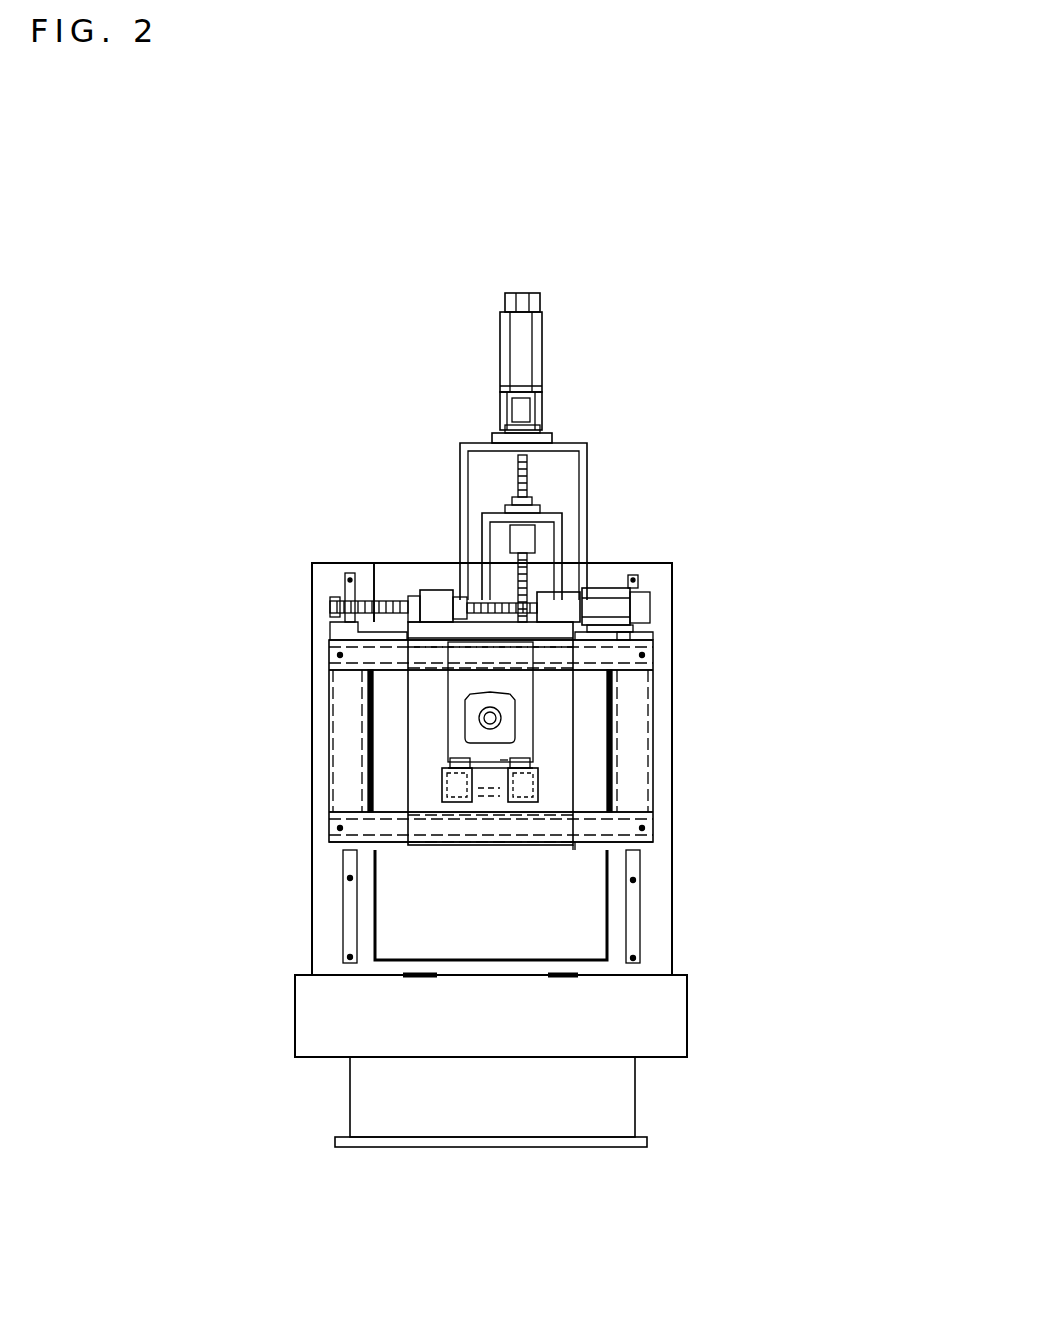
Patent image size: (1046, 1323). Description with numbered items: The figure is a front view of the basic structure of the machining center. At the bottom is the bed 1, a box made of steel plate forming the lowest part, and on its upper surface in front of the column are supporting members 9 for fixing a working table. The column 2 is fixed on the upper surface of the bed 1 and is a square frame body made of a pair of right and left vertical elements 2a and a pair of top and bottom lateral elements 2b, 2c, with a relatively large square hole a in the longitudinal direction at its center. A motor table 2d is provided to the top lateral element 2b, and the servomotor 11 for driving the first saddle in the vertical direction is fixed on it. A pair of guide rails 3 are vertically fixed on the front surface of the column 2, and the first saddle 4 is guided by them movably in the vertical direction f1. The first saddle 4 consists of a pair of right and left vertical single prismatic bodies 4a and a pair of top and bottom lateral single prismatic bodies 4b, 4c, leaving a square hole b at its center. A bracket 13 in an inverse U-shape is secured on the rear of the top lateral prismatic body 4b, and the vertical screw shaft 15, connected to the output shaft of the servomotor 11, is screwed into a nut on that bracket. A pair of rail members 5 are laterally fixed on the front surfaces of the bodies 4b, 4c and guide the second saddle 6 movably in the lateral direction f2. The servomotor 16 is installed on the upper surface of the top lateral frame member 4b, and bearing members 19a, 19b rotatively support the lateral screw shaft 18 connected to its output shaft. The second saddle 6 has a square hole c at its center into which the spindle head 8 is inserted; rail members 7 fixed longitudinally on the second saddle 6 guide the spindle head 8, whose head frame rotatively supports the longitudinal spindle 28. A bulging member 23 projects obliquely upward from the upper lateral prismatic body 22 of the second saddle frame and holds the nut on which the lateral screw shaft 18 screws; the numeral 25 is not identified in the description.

The bed 1 is at (610, 1108).
The column 2 is at (320, 922).
The vertical element 2a is at (318, 790).
The top lateral element 2b is at (392, 563).
The bottom lateral element 2c is at (462, 962).
The motor table 2d is at (575, 443).
The guide rail 3 is at (350, 940).
The first saddle 4 is at (655, 718).
The vertical single prismatic body 4a is at (338, 760).
The top lateral single prismatic body 4b is at (352, 710).
The bottom lateral single prismatic body 4c is at (585, 850).
The rail member 5 is at (370, 652).
The second saddle 6 is at (423, 852).
The rail member 7 is at (446, 772).
The spindle head 8 is at (516, 745).
The supporting member 9 is at (425, 975).
The servomotor 11 is at (548, 320).
The bracket 13 is at (565, 535).
The vertical screw shaft 15 is at (530, 482).
The servomotor 16 is at (655, 600).
The lateral screw shaft 18 is at (378, 565).
The bearing member 19a is at (340, 604).
The bearing member 19b is at (640, 576).
The lateral prismatic body 22 is at (478, 600).
The bulging member 23 is at (440, 592).
The horizontal feed screw 25 is at (412, 600).
The spindle 28 is at (478, 718).
The square hole a is at (500, 935).
The square hole b is at (652, 692).
The square hole c is at (523, 717).
The vertical direction f1 is at (287, 364).
The lateral direction f2 is at (792, 1003).